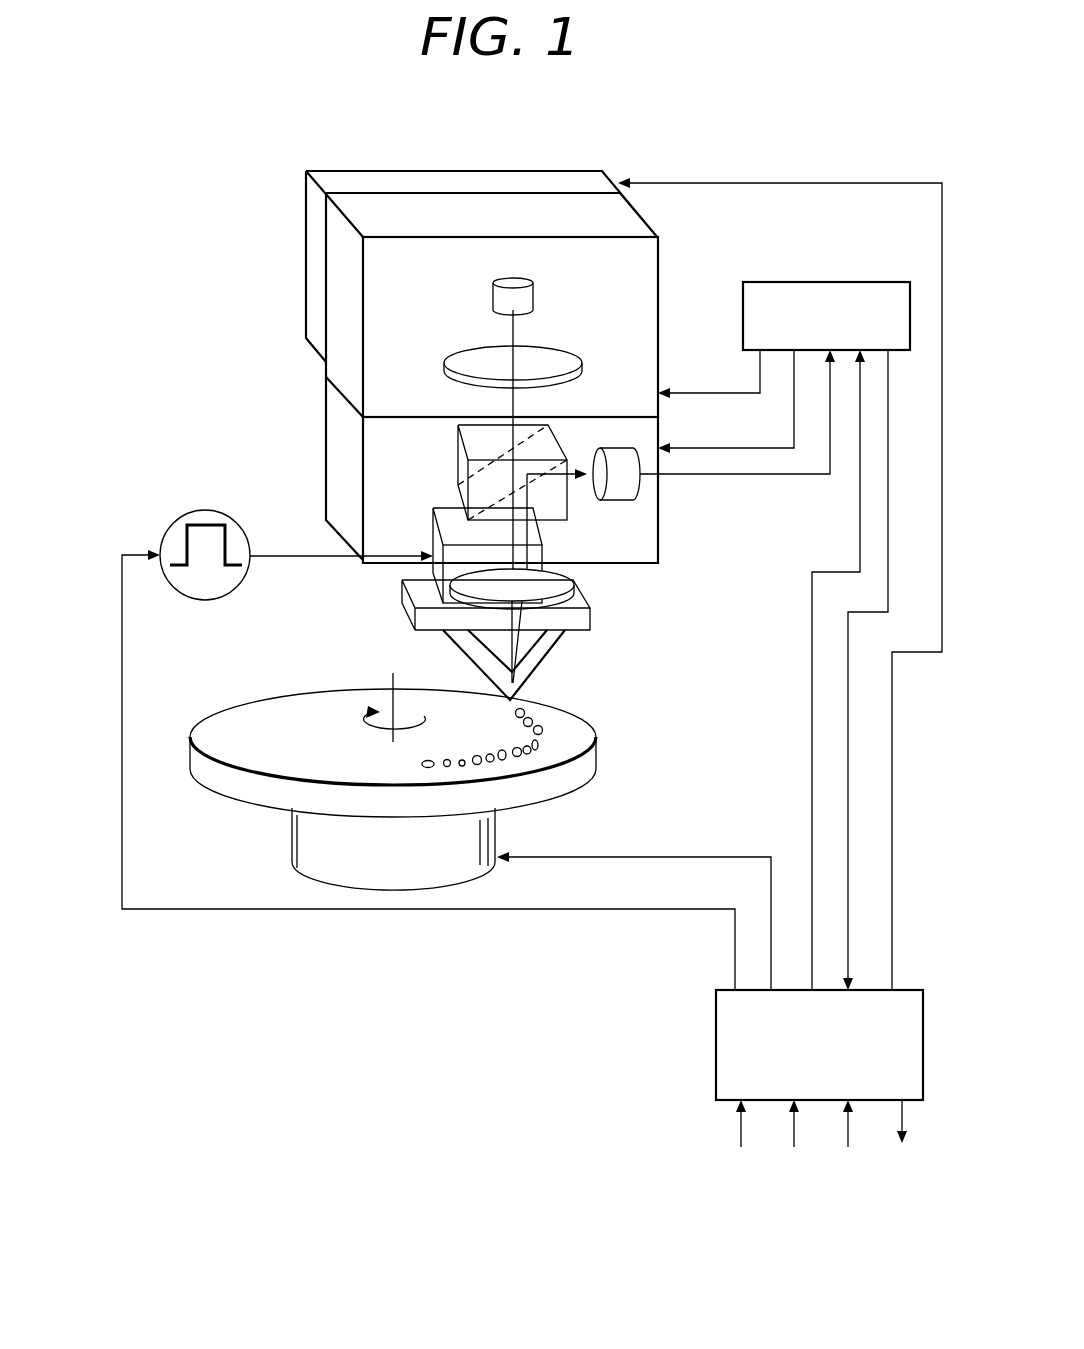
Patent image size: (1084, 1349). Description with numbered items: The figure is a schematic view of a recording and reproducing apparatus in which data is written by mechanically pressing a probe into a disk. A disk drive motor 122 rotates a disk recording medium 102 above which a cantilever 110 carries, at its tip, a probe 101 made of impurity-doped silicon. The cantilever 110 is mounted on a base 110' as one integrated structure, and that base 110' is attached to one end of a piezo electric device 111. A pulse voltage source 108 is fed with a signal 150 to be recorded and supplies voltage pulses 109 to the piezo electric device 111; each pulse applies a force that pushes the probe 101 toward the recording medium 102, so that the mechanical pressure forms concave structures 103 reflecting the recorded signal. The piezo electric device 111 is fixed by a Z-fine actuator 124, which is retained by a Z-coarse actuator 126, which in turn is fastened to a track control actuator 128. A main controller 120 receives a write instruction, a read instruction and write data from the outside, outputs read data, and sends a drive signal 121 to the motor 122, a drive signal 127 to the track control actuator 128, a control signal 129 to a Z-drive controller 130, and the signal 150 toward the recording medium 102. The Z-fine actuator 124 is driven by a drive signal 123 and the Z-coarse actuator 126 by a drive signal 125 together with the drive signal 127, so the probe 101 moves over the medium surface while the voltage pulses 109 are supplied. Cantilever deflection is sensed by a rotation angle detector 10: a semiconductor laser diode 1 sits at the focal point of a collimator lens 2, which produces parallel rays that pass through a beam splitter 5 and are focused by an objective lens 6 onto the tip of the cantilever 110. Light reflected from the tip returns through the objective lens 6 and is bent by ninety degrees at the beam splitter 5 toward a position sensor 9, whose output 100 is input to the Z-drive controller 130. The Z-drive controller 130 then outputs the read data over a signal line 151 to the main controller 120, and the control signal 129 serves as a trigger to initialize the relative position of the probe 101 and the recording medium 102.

The semiconductor laser diode 1 is at (532, 297).
The collimator lens 2 is at (562, 355).
The beam splitter 5 is at (453, 450).
The objective lens 6 is at (402, 600).
The position sensor 9 is at (633, 488).
The rotation angle detector 10 is at (416, 497).
The output of position sensor 100 is at (800, 476).
The probe 101 is at (522, 697).
The disk recording medium 102 is at (205, 773).
The concave structures 103 is at (593, 765).
The pulse voltage source 108 is at (178, 523).
The voltage pulses 109 is at (288, 558).
The cantilever 110 is at (540, 665).
The base 110' is at (544, 613).
The piezo electric device 111 is at (545, 553).
The main controller 120 is at (716, 1032).
The drive signal 121 is at (652, 857).
The disk drive motor 122 is at (290, 852).
The drive signal 123 is at (748, 450).
The Z-fine actuator 124 is at (335, 423).
The drive signal 125 is at (693, 380).
The Z-coarse actuator 126 is at (373, 265).
The drive signal 127 is at (765, 183).
The track control actuator 128 is at (398, 177).
The control signal 129 is at (812, 663).
The Z-drive controller 130 is at (812, 282).
The signal to be recorded 150 is at (122, 663).
The signal line 151 is at (848, 773).